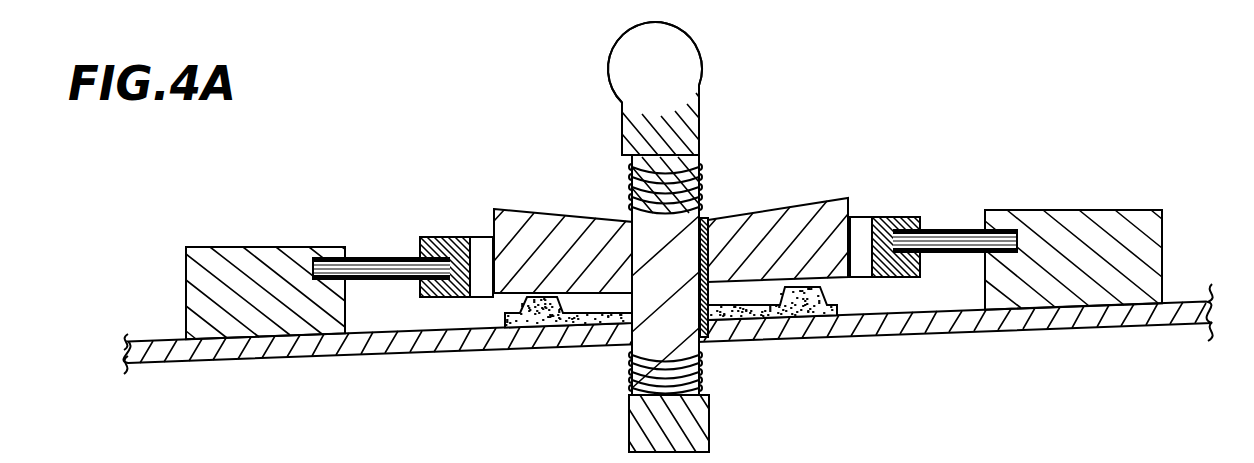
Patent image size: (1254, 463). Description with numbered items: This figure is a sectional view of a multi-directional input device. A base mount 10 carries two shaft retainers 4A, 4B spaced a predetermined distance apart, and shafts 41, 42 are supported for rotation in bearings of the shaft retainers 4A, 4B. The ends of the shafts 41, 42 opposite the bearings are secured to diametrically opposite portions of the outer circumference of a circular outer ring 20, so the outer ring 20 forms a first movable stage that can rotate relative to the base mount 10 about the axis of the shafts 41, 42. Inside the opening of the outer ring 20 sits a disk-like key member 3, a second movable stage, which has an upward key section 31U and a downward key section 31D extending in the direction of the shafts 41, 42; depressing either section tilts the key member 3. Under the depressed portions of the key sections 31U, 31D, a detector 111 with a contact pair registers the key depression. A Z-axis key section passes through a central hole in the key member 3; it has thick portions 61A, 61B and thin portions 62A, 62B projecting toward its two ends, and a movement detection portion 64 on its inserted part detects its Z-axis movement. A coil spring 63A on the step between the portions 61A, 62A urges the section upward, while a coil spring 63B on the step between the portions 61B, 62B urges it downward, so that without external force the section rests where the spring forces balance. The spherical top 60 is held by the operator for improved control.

The key member 3 is at (680, 208).
The shaft retainer 4A is at (248, 244).
The shaft retainer 4B is at (1087, 209).
The base mount 10 is at (1003, 322).
The outer ring 20 is at (448, 236).
The downward key section 31D is at (567, 222).
The upward key section 31U is at (790, 200).
The shaft 41 is at (380, 256).
The shaft 42 is at (953, 230).
The top 60 is at (697, 65).
The thick portion 61A is at (698, 116).
The thick portion 61B is at (637, 427).
The thin portion 62A is at (694, 154).
The thin portion 62B is at (703, 387).
The coil spring 63A is at (627, 165).
The coil spring 63B is at (634, 370).
The movement detection portion 64 is at (712, 337).
The detector 111 is at (828, 337).